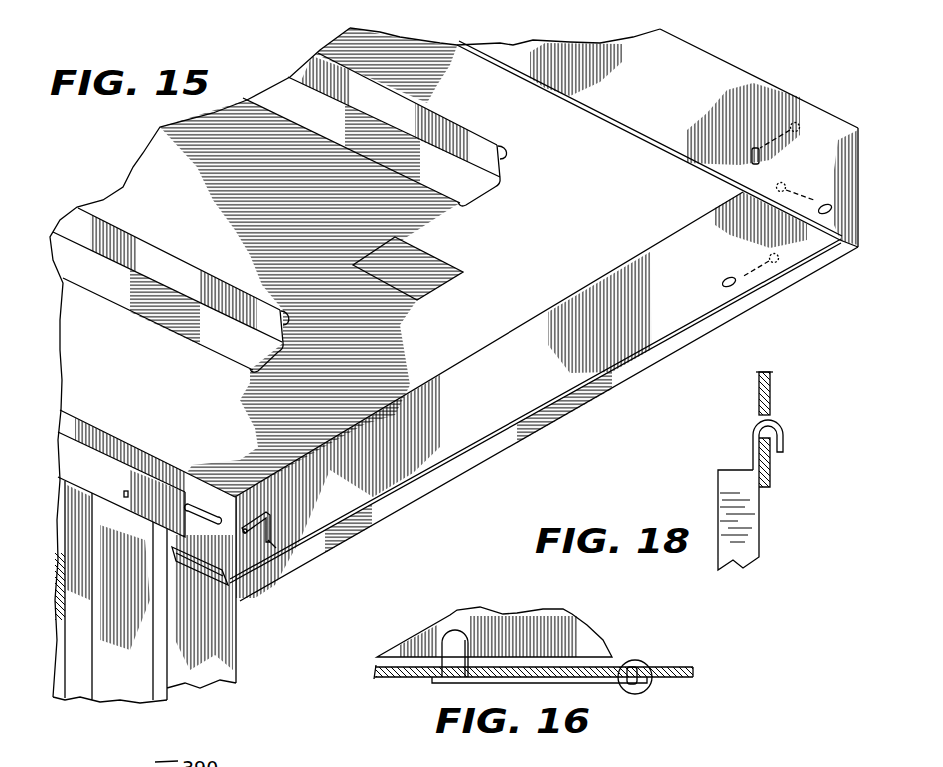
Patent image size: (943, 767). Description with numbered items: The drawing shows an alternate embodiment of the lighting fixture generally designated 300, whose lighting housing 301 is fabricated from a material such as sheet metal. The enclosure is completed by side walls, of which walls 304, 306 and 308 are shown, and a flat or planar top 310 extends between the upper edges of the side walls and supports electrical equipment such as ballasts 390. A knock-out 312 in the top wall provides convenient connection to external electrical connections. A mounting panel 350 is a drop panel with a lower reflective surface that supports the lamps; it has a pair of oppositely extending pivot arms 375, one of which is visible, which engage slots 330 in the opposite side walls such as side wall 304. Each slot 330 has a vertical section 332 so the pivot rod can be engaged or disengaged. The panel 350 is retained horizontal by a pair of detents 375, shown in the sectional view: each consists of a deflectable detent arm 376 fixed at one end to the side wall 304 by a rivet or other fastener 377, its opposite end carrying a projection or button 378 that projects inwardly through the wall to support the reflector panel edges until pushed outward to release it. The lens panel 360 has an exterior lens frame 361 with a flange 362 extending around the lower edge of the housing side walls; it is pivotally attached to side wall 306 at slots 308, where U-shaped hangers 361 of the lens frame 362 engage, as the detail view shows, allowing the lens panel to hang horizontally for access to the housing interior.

In FIG. 15, the alternate embodiment 300 is at (248, 50).
In FIG. 15, the lighting housing 301 is at (716, 52).
In FIG. 15, the side wall 304 is at (498, 405).
In FIG. 16, the side wall 304 is at (664, 665).
In FIG. 15, the side wall 306 is at (117, 442).
In FIG. 18, the side wall 306 is at (771, 393).
In FIG. 15, the side wall / slot 308 is at (670, 98).
In FIG. 18, the side wall / slot 308 is at (774, 421).
In FIG. 15, the top 310 is at (450, 335).
In FIG. 15, the knock-out 312 is at (423, 260).
In FIG. 15, the slot 330 is at (255, 517).
In FIG. 15, the vertical section 332 is at (272, 538).
In FIG. 15, the mounting panel 350 is at (72, 680).
In FIG. 16, the mounting panel 350 is at (567, 630).
In FIG. 15, the lens panel 360 is at (222, 648).
In FIG. 18, the lens panel 360 is at (737, 547).
In FIG. 18, the lens frame / U-shaped hanger 361 is at (786, 441).
In FIG. 18, the flange / lens frame 362 is at (718, 483).
In FIG. 15, the pivot arm / detent 375 is at (210, 507).
In FIG. 16, the pivot arm / detent 375 is at (516, 600).
In FIG. 16, the detent arm 376 is at (440, 685).
In FIG. 16, the rivet or fastener 377 is at (628, 695).
In FIG. 16, the projection or button 378 is at (452, 630).
In FIG. 15, the ballast 390 is at (499, 187).